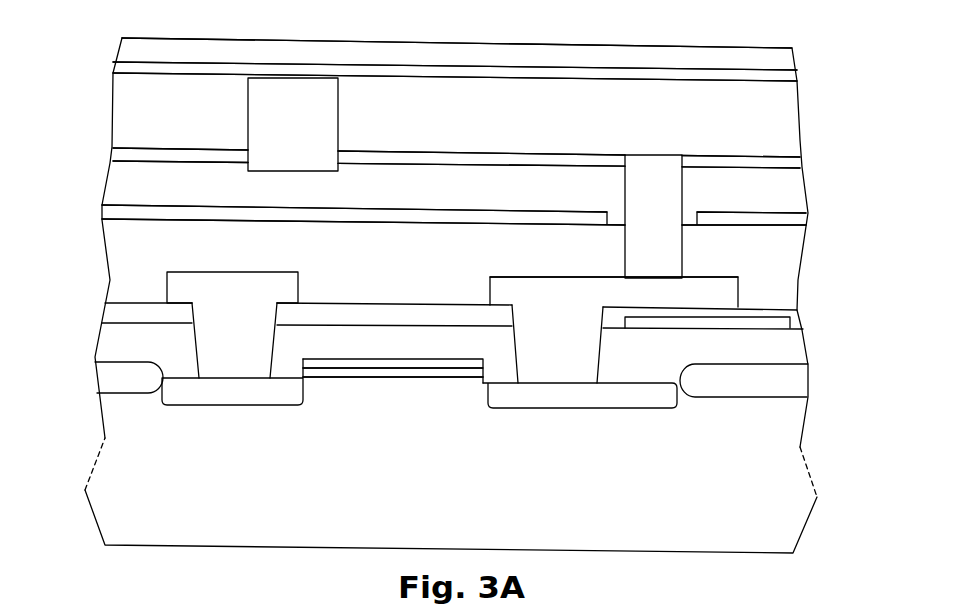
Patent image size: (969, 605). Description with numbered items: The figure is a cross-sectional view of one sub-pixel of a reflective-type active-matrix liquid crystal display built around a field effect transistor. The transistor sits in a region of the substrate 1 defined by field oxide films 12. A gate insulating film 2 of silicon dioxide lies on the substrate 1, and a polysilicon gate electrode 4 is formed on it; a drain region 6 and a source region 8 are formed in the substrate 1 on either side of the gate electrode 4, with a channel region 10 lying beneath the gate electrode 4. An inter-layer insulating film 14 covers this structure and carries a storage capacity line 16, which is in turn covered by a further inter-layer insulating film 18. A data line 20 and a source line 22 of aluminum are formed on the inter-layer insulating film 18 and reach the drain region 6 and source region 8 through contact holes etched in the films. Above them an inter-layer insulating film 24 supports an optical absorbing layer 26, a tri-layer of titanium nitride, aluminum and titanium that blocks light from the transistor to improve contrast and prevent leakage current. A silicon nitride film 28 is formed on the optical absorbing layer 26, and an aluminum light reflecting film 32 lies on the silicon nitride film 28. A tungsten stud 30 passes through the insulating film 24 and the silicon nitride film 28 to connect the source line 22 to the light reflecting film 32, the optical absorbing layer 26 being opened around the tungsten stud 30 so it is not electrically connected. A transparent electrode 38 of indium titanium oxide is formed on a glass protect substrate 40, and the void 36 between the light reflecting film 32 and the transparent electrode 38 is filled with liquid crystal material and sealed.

The substrate 1 is at (787, 456).
The gate insulating film 2 is at (445, 377).
The gate electrode 4 is at (360, 367).
The drain region 6 is at (247, 402).
The source region 8 is at (577, 400).
The channel region 10 is at (395, 387).
The field oxide film 12 is at (808, 382).
The inter-layer insulating film 14 is at (798, 347).
The storage capacity line 16 is at (760, 325).
The inter-layer insulating film 18 is at (797, 320).
The data line 20 is at (286, 286).
The source line 22 is at (493, 286).
The inter-layer insulating film 24 is at (792, 252).
The optical absorbing layer 26 is at (110, 213).
The silicon nitride film 28 is at (795, 194).
The tungsten stud 30 is at (658, 154).
The light reflecting film 32 is at (793, 164).
The void 36 is at (792, 118).
The transparent electrode 38 is at (797, 78).
The glass protect substrate 40 is at (785, 59).